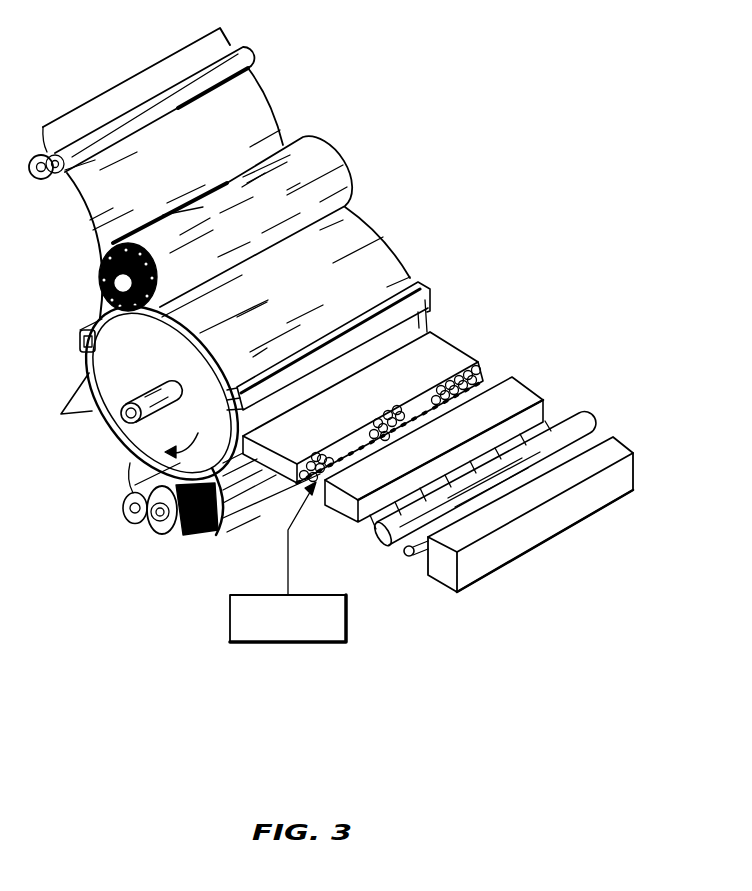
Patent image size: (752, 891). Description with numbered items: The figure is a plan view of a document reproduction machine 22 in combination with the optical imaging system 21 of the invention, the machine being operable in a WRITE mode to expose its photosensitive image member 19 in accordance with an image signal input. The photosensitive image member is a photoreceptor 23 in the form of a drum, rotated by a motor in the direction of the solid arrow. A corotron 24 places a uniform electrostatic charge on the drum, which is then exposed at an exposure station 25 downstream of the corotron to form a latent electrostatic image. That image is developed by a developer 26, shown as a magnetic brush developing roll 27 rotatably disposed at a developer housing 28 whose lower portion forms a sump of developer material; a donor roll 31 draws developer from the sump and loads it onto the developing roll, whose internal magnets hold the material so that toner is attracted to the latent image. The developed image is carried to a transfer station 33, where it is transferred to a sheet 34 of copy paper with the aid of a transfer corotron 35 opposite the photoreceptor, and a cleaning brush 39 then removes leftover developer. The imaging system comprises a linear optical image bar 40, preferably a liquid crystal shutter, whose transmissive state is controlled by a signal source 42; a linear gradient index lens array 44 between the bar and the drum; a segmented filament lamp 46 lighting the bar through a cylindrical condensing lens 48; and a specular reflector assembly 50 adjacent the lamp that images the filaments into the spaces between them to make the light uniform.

The photosensitive image member 19 is at (380, 248).
The optical imaging system 21 is at (520, 290).
The reproduction machine 22 is at (92, 453).
The photoreceptor 23 is at (398, 250).
The corotron 24 is at (420, 300).
The exposure station 25 is at (402, 332).
The developer 26 is at (227, 535).
The magnetic brush developing roll 27 is at (163, 524).
The developer housing 28 is at (248, 495).
The donor roll 31 is at (125, 498).
The transfer station 33 is at (72, 322).
The sheet 34 is at (87, 207).
The transfer corotron 35 is at (78, 340).
The cleaning brush 39 is at (338, 160).
The optical image bar 40 is at (520, 397).
The signal source 42 is at (325, 628).
The linear gradient index lens array 44 is at (460, 362).
The segmented filament lamp 46 is at (608, 439).
The cylindrical condensing lens 48 is at (583, 410).
The specular reflector assembly 50 is at (575, 565).